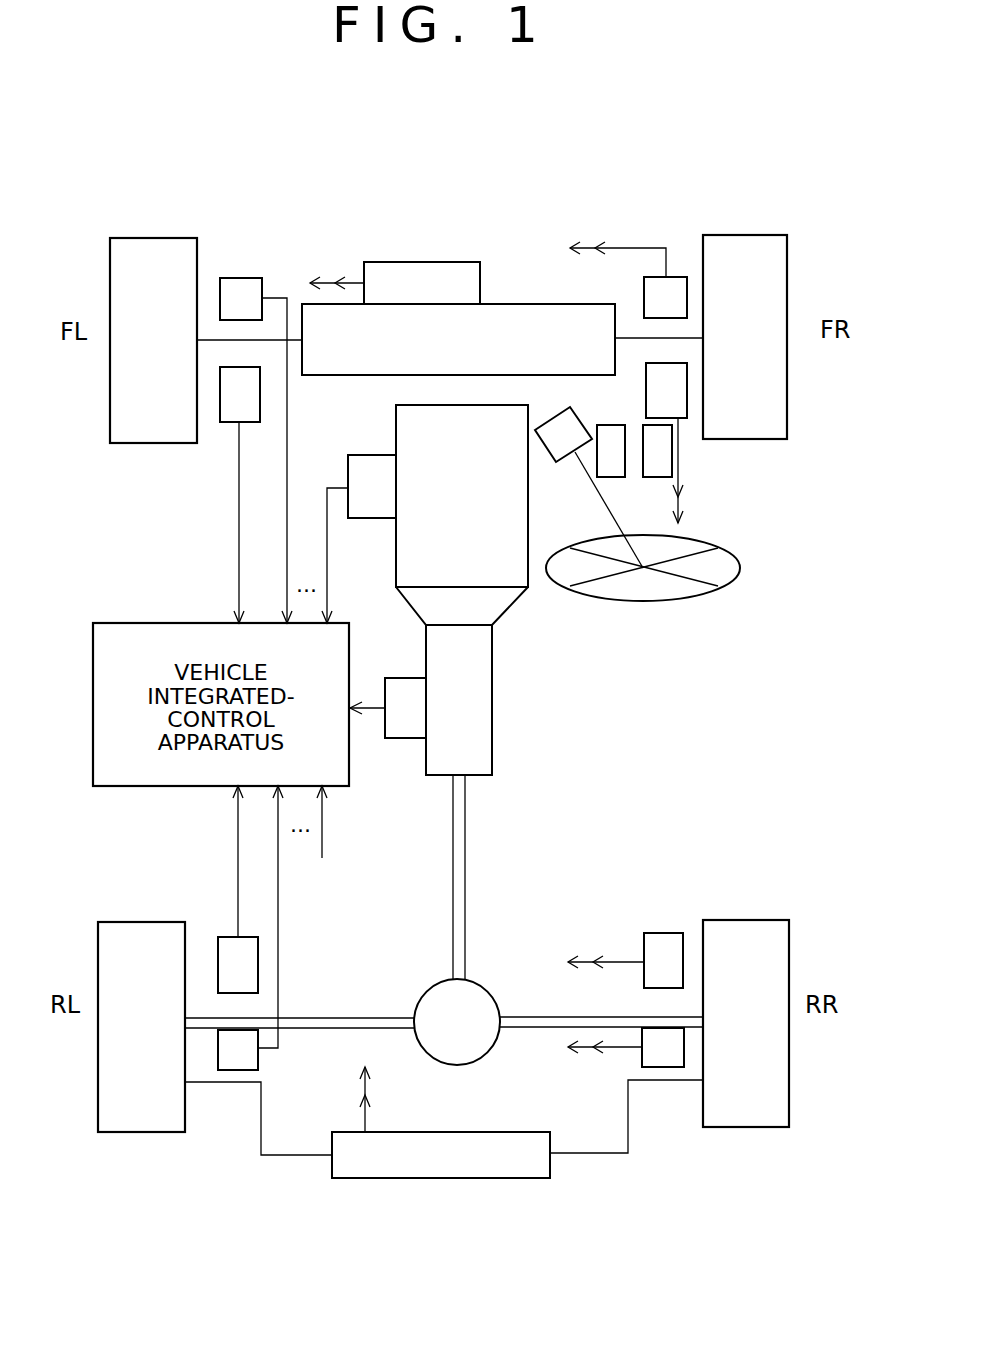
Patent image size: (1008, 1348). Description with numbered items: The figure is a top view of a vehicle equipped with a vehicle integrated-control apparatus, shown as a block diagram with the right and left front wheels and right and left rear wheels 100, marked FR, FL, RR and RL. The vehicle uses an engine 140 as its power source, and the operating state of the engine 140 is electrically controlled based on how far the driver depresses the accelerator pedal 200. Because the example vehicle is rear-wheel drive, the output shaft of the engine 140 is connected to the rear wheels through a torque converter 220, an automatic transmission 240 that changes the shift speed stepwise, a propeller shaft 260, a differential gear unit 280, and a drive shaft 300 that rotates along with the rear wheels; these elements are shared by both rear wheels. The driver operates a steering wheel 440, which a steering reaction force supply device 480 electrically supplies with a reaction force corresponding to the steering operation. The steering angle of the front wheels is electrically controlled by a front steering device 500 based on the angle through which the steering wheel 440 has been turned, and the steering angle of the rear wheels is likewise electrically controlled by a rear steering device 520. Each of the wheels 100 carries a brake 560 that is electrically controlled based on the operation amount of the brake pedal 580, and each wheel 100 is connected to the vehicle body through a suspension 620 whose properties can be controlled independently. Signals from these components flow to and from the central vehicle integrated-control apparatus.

The wheel 100 is at (152, 248).
The engine 140 is at (530, 572).
The accelerator pedal 200 is at (672, 450).
The torque converter 220 is at (492, 607).
The transmission 240 is at (478, 710).
The propeller shaft 260 is at (468, 862).
The differential gear unit 280 is at (430, 992).
The drive shaft 300 is at (350, 1016).
The steering wheel 440 is at (690, 598).
The steering reaction force supply device 480 is at (553, 462).
The front steering device 500 is at (493, 318).
The rear steering device 520 is at (425, 1178).
The brake 560 is at (228, 422).
The brake pedal 580 is at (612, 477).
The suspension 620 is at (245, 278).